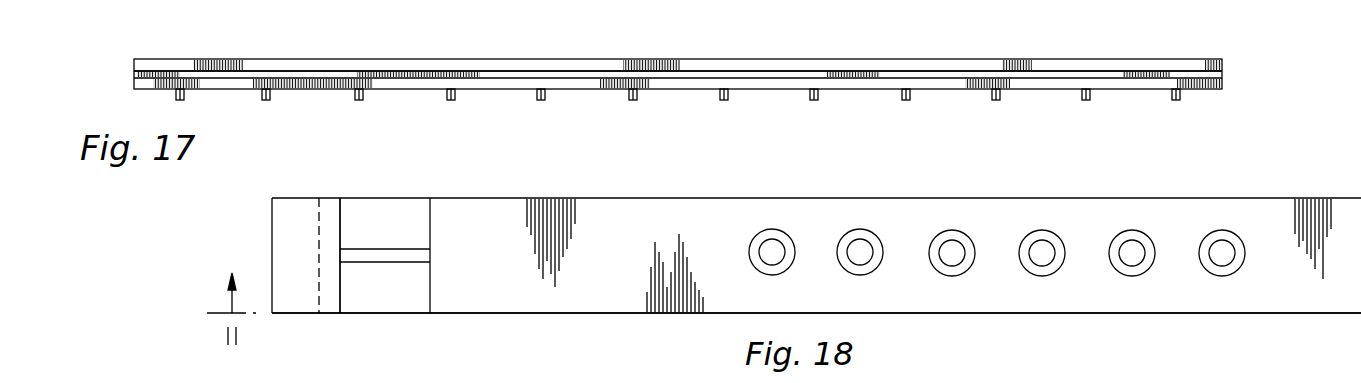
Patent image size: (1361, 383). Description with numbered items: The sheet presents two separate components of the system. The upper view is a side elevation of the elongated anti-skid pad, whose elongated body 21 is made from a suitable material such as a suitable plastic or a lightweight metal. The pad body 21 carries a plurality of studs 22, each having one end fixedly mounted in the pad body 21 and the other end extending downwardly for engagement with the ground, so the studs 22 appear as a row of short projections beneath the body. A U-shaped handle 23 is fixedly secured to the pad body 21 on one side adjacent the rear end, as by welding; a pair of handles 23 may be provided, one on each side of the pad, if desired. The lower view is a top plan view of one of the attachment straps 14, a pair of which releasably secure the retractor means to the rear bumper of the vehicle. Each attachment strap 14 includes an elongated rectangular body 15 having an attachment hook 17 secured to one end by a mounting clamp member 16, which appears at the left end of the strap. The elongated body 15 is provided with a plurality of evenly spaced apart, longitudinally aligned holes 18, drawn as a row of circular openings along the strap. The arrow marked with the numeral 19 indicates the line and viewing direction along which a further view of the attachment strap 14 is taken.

In FIG. 18, the attachment strap 14 is at (518, 323).
In FIG. 18, the elongated rectangular body 15 is at (713, 213).
In FIG. 18, the mounting clamp member 16 is at (385, 211).
In FIG. 18, the attachment hook 17 is at (297, 211).
In FIG. 18, the holes 18 is at (858, 255).
In FIG. 18, the section line 19— 19 is at (231, 293).
In FIG. 17, the elongated body 21 is at (682, 65).
In FIG. 17, the studs 22 is at (630, 96).
In FIG. 17, the U-shaped handle 23 is at (250, 72).